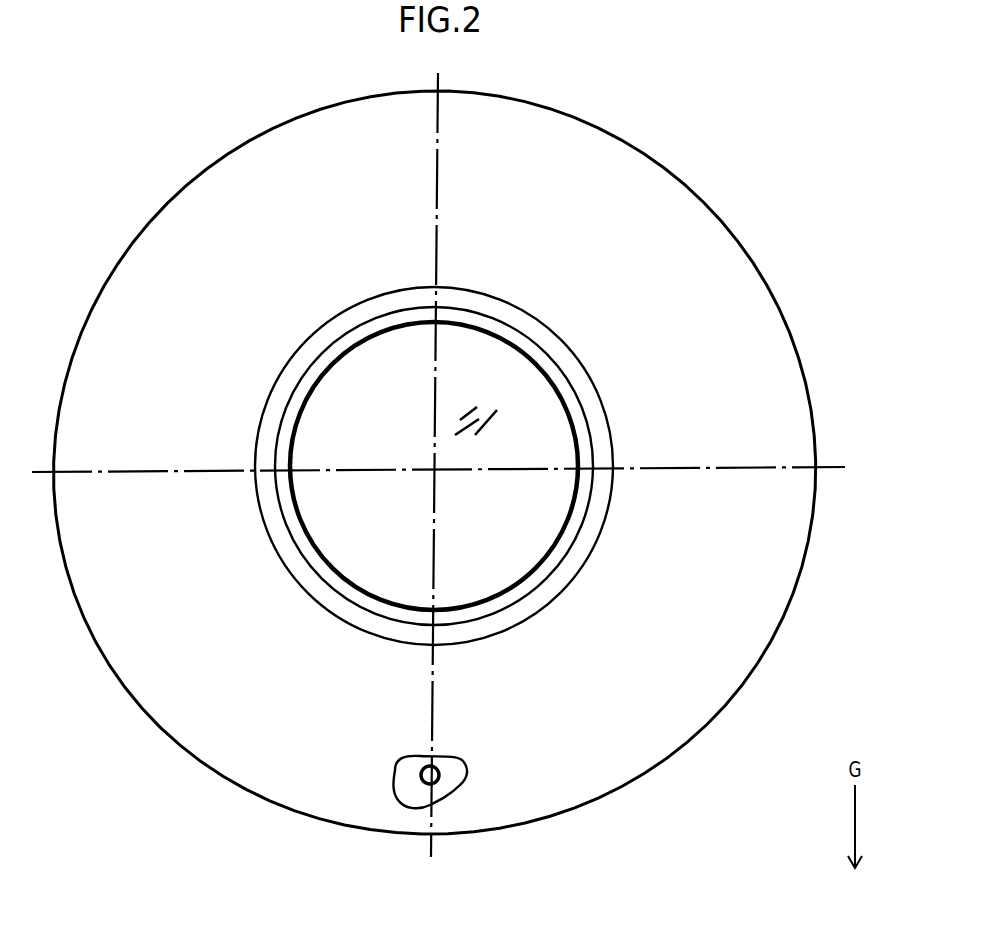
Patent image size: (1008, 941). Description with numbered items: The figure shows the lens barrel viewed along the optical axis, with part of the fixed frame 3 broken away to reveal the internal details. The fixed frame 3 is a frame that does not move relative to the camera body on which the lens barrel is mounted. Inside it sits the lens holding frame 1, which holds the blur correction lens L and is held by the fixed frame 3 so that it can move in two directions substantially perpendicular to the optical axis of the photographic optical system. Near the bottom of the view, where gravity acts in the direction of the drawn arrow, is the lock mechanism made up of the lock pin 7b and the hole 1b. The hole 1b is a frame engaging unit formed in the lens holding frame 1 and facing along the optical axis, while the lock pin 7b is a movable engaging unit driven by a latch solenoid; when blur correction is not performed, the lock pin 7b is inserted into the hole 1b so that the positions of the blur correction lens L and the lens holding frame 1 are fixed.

The fixed frame 3 is at (712, 273).
The lens holding frame 1 is at (575, 518).
The blur correction lens L is at (521, 553).
The hole 1b is at (437, 785).
The lock pin 7b is at (440, 778).